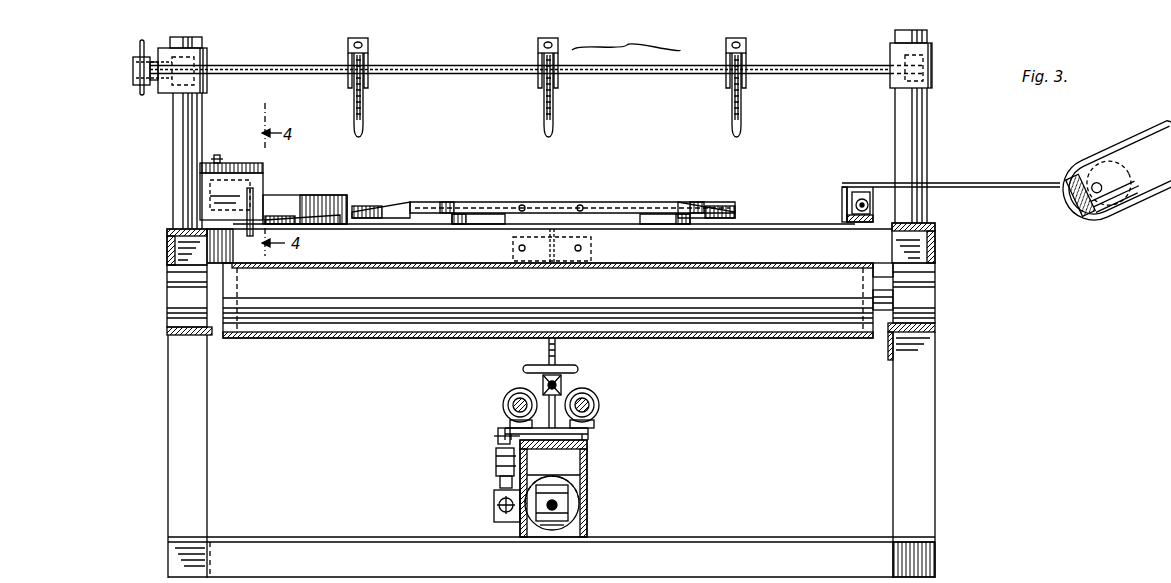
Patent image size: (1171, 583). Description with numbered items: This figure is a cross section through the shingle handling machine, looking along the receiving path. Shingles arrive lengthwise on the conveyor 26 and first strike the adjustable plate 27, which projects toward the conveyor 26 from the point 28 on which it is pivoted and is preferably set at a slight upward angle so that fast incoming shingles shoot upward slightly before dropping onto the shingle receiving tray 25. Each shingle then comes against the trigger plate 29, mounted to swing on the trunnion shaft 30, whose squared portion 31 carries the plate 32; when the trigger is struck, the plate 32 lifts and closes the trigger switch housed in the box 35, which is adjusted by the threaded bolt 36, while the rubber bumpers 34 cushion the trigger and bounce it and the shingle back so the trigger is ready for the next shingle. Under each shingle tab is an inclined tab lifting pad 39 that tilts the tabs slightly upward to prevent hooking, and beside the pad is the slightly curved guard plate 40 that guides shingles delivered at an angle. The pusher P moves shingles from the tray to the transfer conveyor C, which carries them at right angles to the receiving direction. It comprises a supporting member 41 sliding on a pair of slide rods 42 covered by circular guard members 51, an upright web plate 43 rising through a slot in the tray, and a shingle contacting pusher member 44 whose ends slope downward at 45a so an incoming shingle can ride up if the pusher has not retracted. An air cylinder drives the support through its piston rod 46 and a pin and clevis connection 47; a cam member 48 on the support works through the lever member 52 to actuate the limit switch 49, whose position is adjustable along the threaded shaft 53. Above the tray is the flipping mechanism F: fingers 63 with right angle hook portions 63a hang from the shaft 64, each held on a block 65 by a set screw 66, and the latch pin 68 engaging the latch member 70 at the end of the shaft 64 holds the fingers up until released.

The shingle receiving tray 25 is at (780, 224).
The conveyor 26 is at (1118, 152).
The adjustable plate 27 is at (985, 185).
The pivot point 28 is at (862, 195).
The trigger plate 29 is at (250, 224).
The trunnion shaft 30 is at (256, 166).
The squared portion 31 is at (256, 190).
The plate 32 is at (200, 165).
The rubber bumpers 34 is at (246, 238).
The box 35 is at (200, 187).
The threaded bolt 36 is at (217, 155).
The inclined tab lifting pad 39 is at (648, 226).
The guard plate 40 is at (320, 195).
The supporting member 41 is at (561, 386).
The slide rods 42 is at (503, 405).
The upright web plate 43 is at (558, 348).
The pusher member 44 is at (470, 204).
The sloped ends 45a is at (390, 210).
The piston rod 46 is at (543, 382).
The pin and clevis connection 47 is at (561, 382).
The cam member 48 is at (498, 434).
The limit switch 49 is at (494, 512).
The circular guard members 51 is at (516, 390).
The lever member 52 is at (496, 464).
The threaded shaft 53 is at (562, 504).
The fingers 63 is at (368, 104).
The right angle hook portions 63a is at (732, 128).
The shaft 64 is at (445, 70).
The block 65 is at (368, 48).
The set screw 66 is at (348, 44).
The latch pin 68 is at (133, 74).
The latch member 70 is at (140, 46).
The transfer conveyor C is at (730, 345).
The pusher plate P is at (600, 208).
The shingle flipping or inverting mechanism F is at (626, 36).